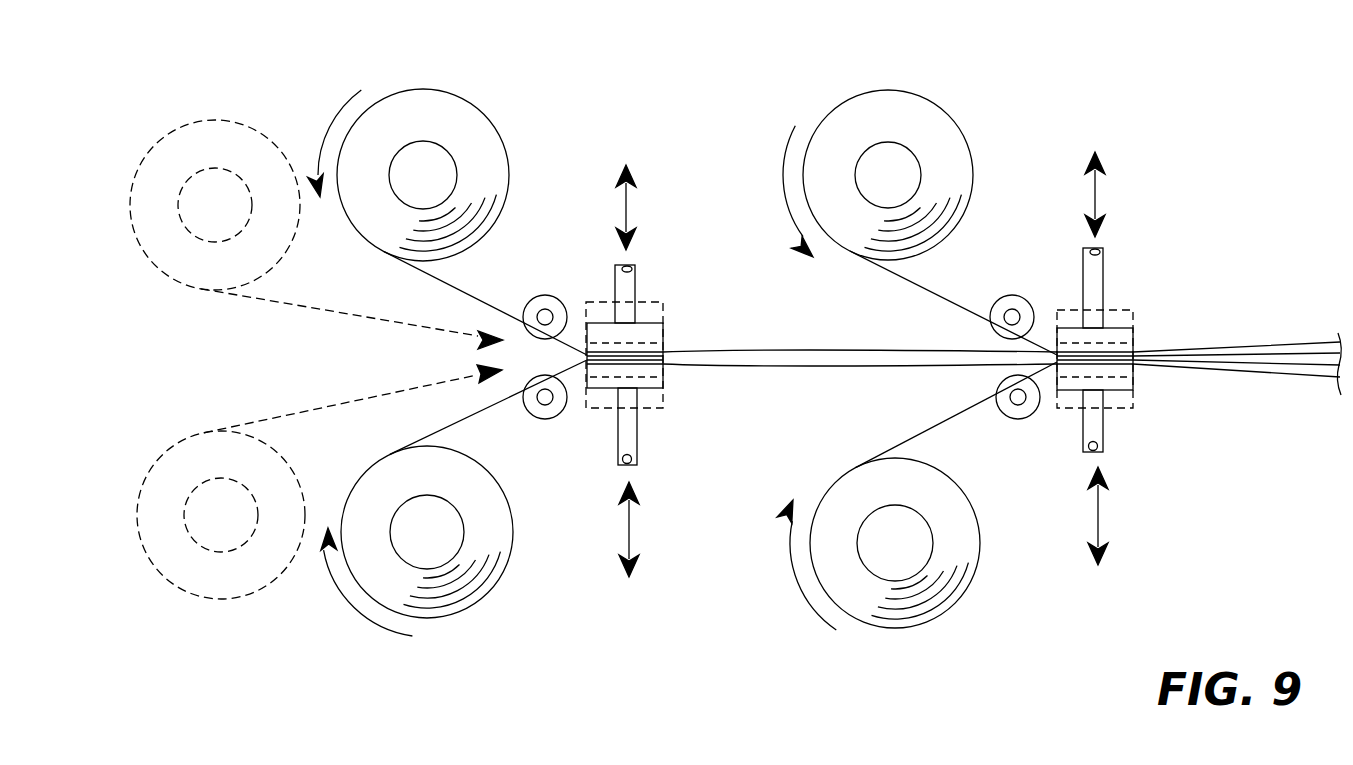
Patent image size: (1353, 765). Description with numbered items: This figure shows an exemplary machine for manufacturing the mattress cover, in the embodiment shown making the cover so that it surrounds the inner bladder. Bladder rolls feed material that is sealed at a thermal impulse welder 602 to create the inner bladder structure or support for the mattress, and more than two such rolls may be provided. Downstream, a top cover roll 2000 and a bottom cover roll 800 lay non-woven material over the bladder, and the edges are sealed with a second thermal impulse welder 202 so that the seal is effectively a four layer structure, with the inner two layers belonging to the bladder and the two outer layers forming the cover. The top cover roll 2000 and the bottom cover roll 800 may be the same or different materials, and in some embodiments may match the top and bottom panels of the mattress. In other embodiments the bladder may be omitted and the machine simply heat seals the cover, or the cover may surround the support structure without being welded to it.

The thermal impulse welder 602 is at (645, 335).
The top cover roll 2000 is at (885, 115).
The bottom cover roll 800 is at (880, 605).
The thermal impulse welder 202 is at (1136, 346).